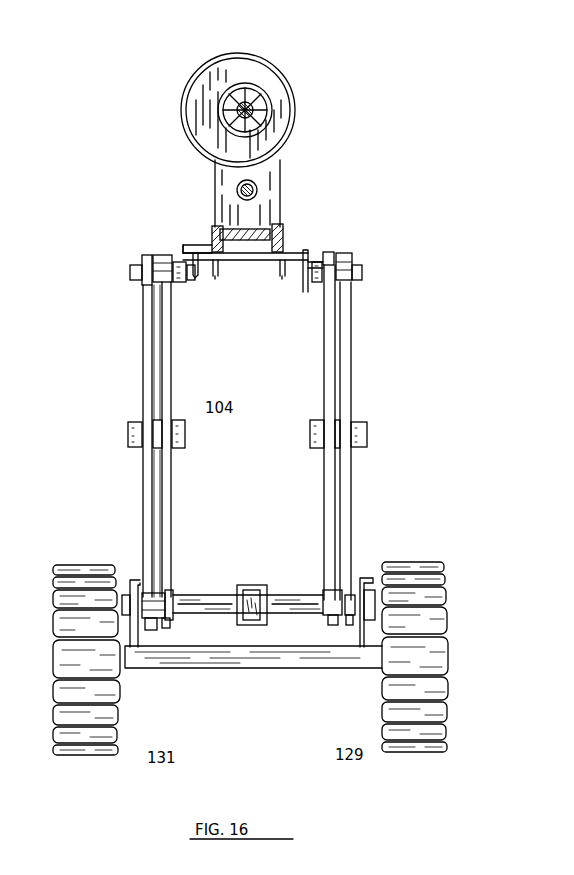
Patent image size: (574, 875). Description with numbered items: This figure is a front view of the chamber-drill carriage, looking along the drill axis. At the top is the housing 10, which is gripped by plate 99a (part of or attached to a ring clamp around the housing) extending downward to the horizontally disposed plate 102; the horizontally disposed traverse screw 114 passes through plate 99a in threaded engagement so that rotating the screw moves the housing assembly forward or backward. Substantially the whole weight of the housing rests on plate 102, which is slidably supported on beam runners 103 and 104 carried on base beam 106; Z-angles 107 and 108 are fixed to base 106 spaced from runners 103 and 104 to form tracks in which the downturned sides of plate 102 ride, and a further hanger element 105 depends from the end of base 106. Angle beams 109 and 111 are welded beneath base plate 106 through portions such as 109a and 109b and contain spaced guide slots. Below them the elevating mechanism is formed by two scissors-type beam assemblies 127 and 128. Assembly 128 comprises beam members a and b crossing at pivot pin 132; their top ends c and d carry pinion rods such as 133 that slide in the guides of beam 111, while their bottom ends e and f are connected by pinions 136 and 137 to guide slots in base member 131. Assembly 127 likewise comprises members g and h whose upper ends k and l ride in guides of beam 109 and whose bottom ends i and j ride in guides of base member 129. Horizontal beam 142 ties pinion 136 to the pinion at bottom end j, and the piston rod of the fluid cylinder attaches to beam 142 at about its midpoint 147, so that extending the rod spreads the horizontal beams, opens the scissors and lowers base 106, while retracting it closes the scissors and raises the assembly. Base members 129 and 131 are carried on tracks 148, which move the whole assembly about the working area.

The housing 10 is at (272, 60).
The traverse screw 114 is at (255, 187).
The plate 99a is at (275, 202).
The horizontally disposed plate 102 is at (228, 230).
The Z-angle 107 is at (284, 238).
The Z-angle 108 is at (210, 246).
The base beam 106 is at (249, 262).
The beam runner 104 is at (216, 263).
The beam runner 103 is at (276, 262).
The hanger plate 105 is at (302, 268).
The horizontally disposed beam member 109 is at (314, 278).
The portion of beam 109 109a is at (312, 262).
The plate 109b is at (183, 250).
The upper end of member g k is at (332, 253).
The upper end of member h l is at (347, 256).
The top end of beam member b d is at (145, 257).
The top end of beam member a c is at (161, 256).
The pinion rod 133 is at (130, 273).
The beam member b is at (143, 331).
The beam member a is at (172, 386).
The horizontally disposed beam member 111 is at (163, 288).
The member of assembly 127 g is at (324, 394).
The member of assembly 127 h is at (351, 388).
The scissors-type beam assembly 128 is at (140, 418).
The pivot pin 132 is at (187, 440).
The scissors-type beam assembly 127 is at (358, 418).
The base member 131 is at (130, 646).
The pinion 136 is at (175, 598).
The bottom end of beam b f is at (152, 620).
The bottom end of beam a e is at (171, 625).
The horizontal beam 142 is at (278, 595).
The midpoint of beam 142 147 is at (250, 588).
The bottom end of member g i is at (333, 620).
The bottom end of member h j is at (348, 620).
The base member 129 is at (362, 645).
The pinion 137 is at (131, 585).
The tracks 148 is at (437, 622).